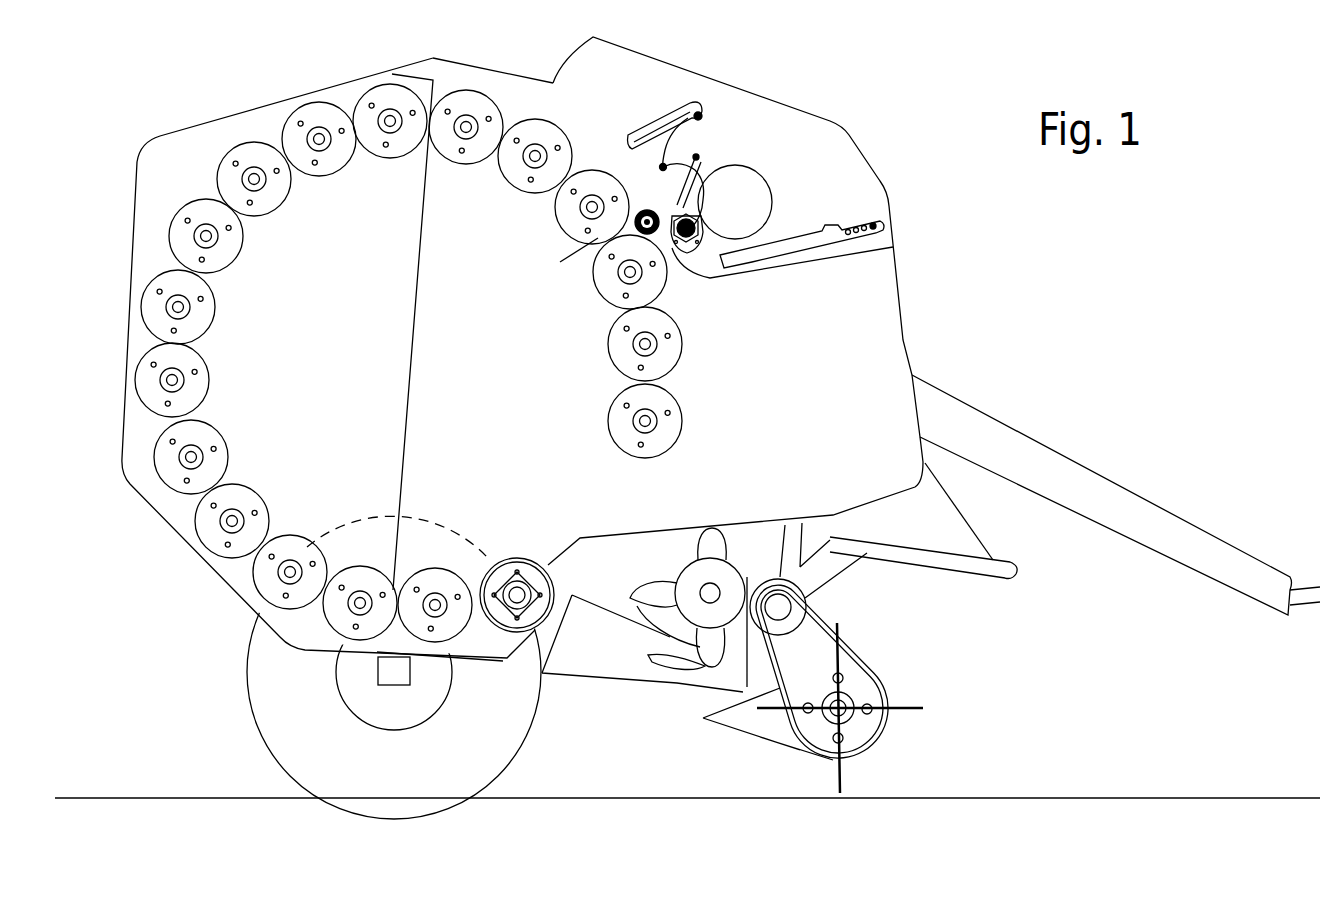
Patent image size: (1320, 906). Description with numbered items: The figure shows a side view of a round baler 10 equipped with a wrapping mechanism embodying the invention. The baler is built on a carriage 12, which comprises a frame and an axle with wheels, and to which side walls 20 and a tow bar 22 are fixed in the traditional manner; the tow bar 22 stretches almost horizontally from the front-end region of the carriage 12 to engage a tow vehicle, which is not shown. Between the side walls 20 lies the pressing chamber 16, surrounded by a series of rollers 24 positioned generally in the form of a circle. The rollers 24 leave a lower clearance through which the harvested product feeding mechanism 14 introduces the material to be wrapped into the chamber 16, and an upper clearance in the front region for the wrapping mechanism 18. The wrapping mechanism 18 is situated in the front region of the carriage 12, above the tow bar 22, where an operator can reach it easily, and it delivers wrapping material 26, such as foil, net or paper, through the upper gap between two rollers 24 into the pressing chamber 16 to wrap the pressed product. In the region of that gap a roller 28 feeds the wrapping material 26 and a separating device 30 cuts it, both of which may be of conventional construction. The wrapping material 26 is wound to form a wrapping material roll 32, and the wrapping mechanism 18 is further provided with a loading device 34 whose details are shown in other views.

The round baler 10 is at (933, 308).
The carriage 12 is at (168, 181).
The harvested product feeding mechanism 14 is at (922, 668).
The pressing chamber 16 is at (341, 356).
The wrapping mechanism 18 is at (828, 168).
The side walls 20 is at (794, 345).
The tow bar 22 is at (1113, 487).
The rollers 24 is at (376, 97).
The wrapping material 26 is at (642, 206).
The roller 28 is at (633, 207).
The separating device 30 is at (558, 248).
The wrapping material roll 32 is at (747, 160).
The loading device 34 is at (733, 108).